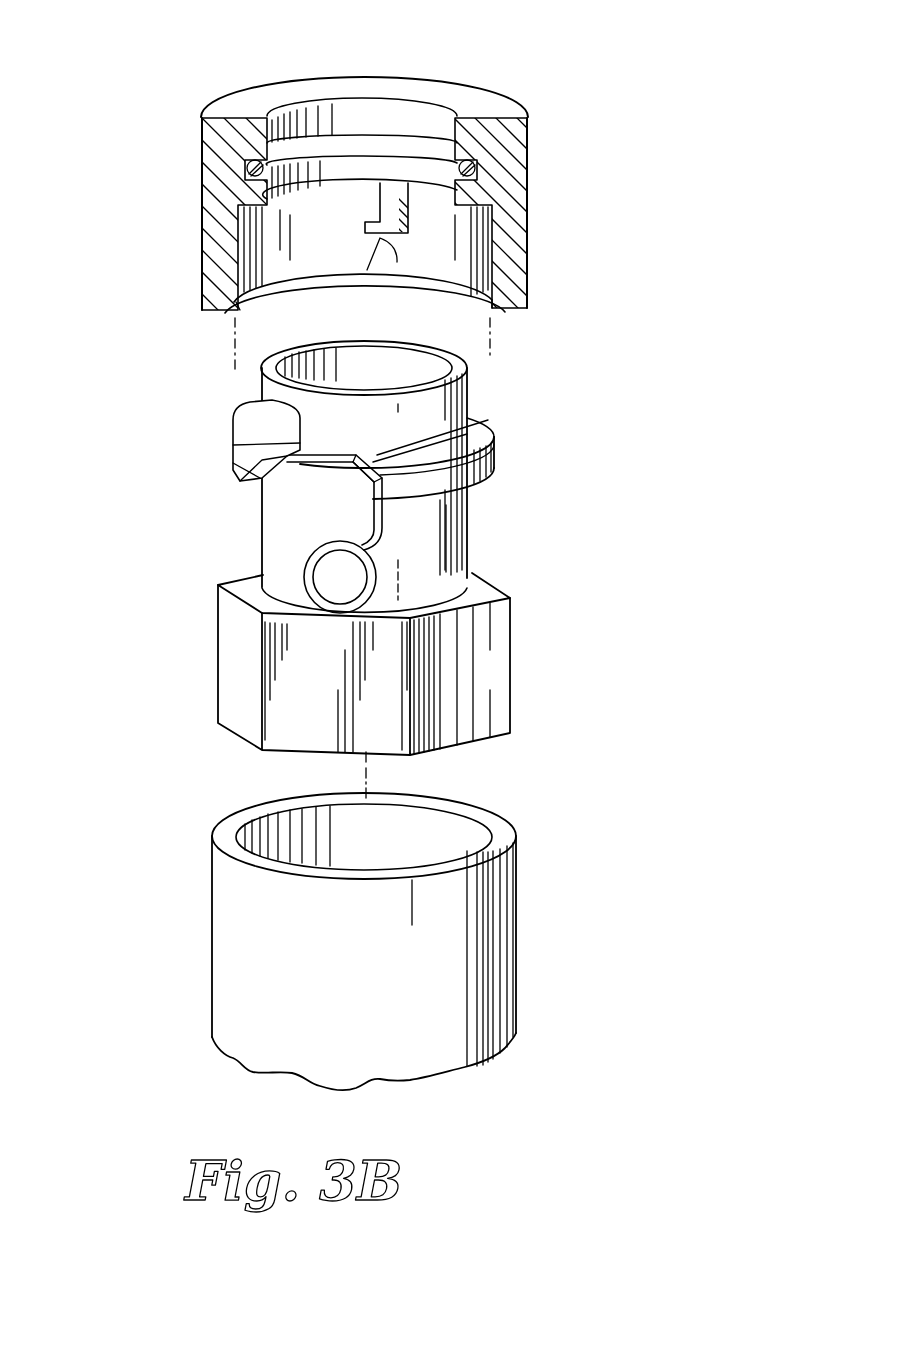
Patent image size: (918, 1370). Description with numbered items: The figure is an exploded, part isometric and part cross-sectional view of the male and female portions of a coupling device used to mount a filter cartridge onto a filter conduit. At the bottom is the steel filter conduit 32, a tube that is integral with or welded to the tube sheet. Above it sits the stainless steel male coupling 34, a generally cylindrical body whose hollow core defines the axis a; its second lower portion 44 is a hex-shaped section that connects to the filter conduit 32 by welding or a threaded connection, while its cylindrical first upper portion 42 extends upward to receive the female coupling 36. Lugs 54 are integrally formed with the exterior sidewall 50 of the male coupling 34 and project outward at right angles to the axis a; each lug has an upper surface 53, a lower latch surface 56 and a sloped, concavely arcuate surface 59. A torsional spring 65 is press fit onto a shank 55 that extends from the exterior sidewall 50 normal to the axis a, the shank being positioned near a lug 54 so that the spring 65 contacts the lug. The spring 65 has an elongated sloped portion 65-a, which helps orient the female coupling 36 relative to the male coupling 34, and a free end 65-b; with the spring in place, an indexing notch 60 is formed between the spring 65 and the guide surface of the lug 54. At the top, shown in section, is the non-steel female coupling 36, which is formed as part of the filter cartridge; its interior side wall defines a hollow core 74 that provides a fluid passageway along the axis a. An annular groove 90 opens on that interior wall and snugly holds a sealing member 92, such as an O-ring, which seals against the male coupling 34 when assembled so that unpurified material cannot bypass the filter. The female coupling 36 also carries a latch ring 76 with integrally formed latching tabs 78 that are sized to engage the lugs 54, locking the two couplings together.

The female coupling 36 is at (528, 206).
The hollow core 74 is at (349, 106).
The sealing member 92 is at (408, 145).
The latch ring 76 is at (240, 228).
The annular groove 90 is at (247, 167).
The latching tabs 78 is at (397, 262).
The first upper portion 42 is at (468, 372).
The exterior sidewall 50 is at (358, 424).
The lugs 54 is at (496, 436).
The upper surface 53 is at (492, 468).
The indexing notch 60 is at (488, 421).
The latch surface 56 is at (472, 505).
The spring 65 is at (304, 505).
The elongated sloped portion 65-a is at (356, 485).
The free end 65-b is at (250, 415).
The shank 55 is at (337, 572).
The concavely arcuate surface 59 is at (248, 481).
The male coupling 34 is at (515, 620).
The second lower portion 44 is at (512, 686).
The axis a is at (368, 770).
The filter conduit 32 is at (518, 866).